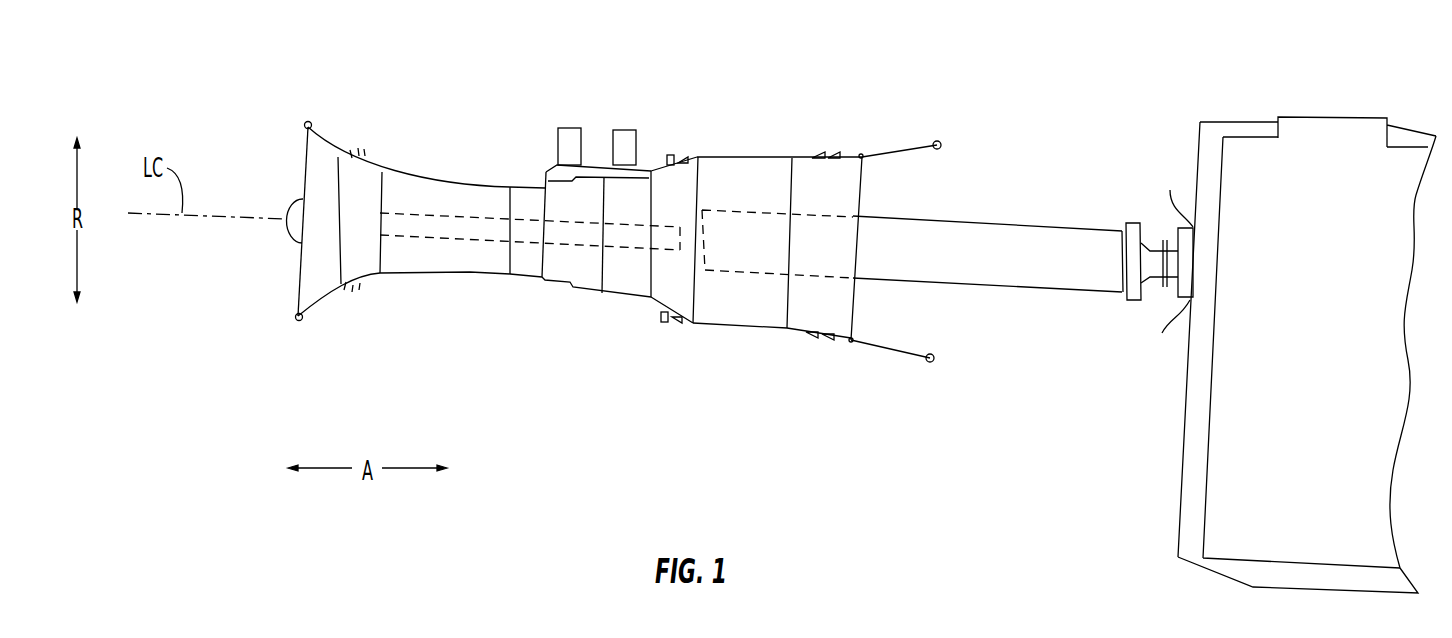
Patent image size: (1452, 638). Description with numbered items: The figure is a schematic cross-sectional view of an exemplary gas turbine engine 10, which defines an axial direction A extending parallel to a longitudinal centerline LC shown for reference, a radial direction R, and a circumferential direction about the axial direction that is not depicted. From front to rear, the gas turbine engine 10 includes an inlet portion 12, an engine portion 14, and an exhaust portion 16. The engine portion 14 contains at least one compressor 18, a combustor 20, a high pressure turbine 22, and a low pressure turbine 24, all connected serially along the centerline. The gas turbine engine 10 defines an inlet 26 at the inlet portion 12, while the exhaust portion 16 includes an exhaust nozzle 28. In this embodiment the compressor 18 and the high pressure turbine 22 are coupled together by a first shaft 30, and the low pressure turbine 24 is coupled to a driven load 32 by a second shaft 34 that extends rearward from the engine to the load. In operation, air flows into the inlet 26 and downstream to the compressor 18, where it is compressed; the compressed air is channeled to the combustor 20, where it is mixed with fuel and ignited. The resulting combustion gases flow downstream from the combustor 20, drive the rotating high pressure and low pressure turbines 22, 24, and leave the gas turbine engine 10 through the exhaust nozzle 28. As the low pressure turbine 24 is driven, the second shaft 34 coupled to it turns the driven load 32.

The gas turbine engine 10 is at (462, 98).
The inlet portion 12 is at (280, 312).
The engine portion 14 is at (546, 168).
The exhaust portion 16 is at (800, 372).
The compressor 18 is at (415, 273).
The combustor 20 is at (598, 302).
The high pressure turbine 22 is at (620, 287).
The low pressure turbine 24 is at (757, 158).
The inlet 26 is at (298, 174).
The exhaust nozzle 28 is at (837, 193).
The first shaft 30 is at (433, 213).
The driven load 32 is at (1322, 108).
The second shaft 34 is at (1077, 287).